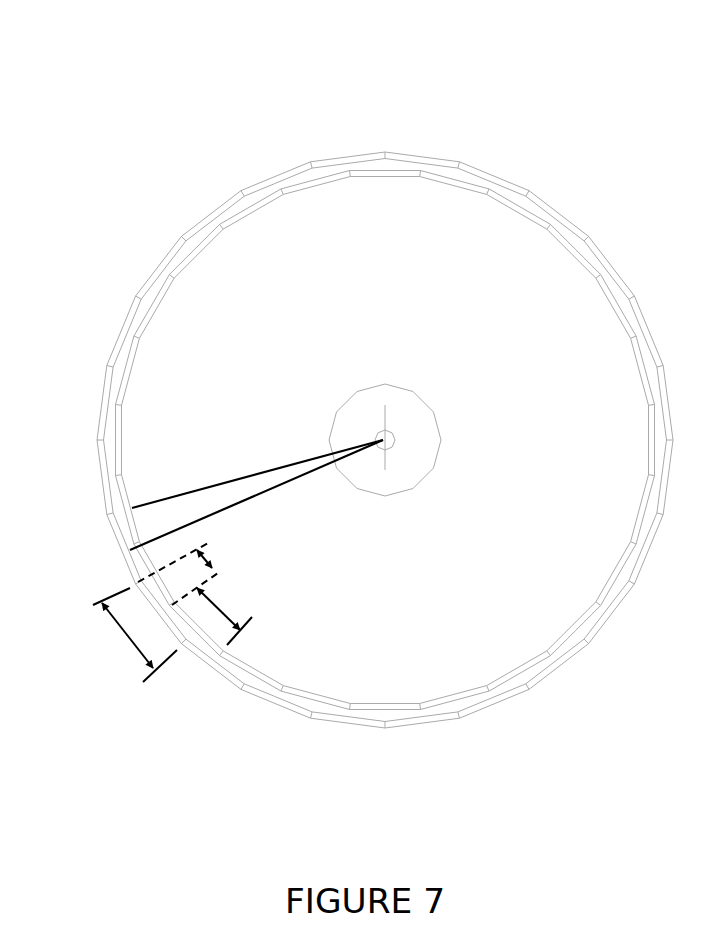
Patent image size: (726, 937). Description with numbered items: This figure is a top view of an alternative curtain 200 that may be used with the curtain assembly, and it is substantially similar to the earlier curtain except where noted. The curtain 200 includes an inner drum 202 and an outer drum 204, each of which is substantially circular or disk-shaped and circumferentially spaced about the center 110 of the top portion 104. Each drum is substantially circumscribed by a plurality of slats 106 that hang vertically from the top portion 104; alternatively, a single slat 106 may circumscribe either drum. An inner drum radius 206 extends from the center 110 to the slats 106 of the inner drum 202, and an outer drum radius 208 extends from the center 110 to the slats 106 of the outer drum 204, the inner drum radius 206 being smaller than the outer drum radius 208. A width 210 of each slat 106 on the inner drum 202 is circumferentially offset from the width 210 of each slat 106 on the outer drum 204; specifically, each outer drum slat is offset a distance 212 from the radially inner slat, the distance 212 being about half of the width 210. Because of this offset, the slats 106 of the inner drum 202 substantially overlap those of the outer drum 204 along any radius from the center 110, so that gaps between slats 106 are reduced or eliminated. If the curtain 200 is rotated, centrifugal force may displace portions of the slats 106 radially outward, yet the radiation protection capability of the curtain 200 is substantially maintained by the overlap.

The curtain 200 is at (135, 105).
The outer drum 204 is at (153, 258).
The inner drum 202 is at (215, 263).
The slats 106 is at (280, 175).
The top portion 104 is at (487, 226).
The center 110 is at (390, 428).
The inner drum radius 206 is at (285, 466).
The outer drum radius 208 is at (268, 491).
The width 210 is at (221, 609).
The distance 212 is at (212, 556).